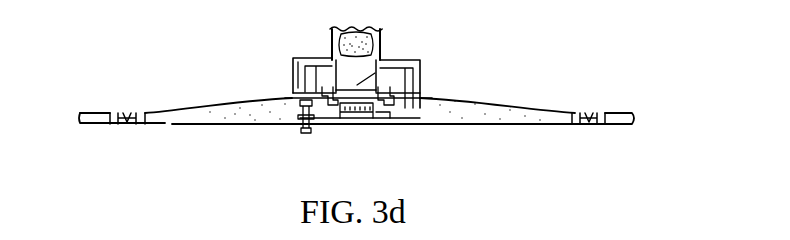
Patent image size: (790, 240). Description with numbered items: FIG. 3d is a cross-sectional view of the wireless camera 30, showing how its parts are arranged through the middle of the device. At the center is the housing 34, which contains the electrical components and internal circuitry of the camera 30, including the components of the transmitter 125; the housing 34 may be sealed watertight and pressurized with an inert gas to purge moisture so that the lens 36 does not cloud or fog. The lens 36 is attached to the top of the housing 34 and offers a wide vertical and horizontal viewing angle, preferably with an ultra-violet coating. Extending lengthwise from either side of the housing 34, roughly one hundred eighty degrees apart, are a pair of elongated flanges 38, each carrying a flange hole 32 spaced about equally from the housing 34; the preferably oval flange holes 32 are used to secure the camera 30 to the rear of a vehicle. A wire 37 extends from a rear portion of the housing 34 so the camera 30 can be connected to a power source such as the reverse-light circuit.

The wireless camera 30 is at (420, 72).
The flange holes 32 is at (130, 113).
The housing 34 is at (307, 60).
The lens 36 is at (382, 25).
The wire 37 is at (298, 130).
The elongated flanges 38 is at (223, 115).
The transmitter 125 is at (373, 119).